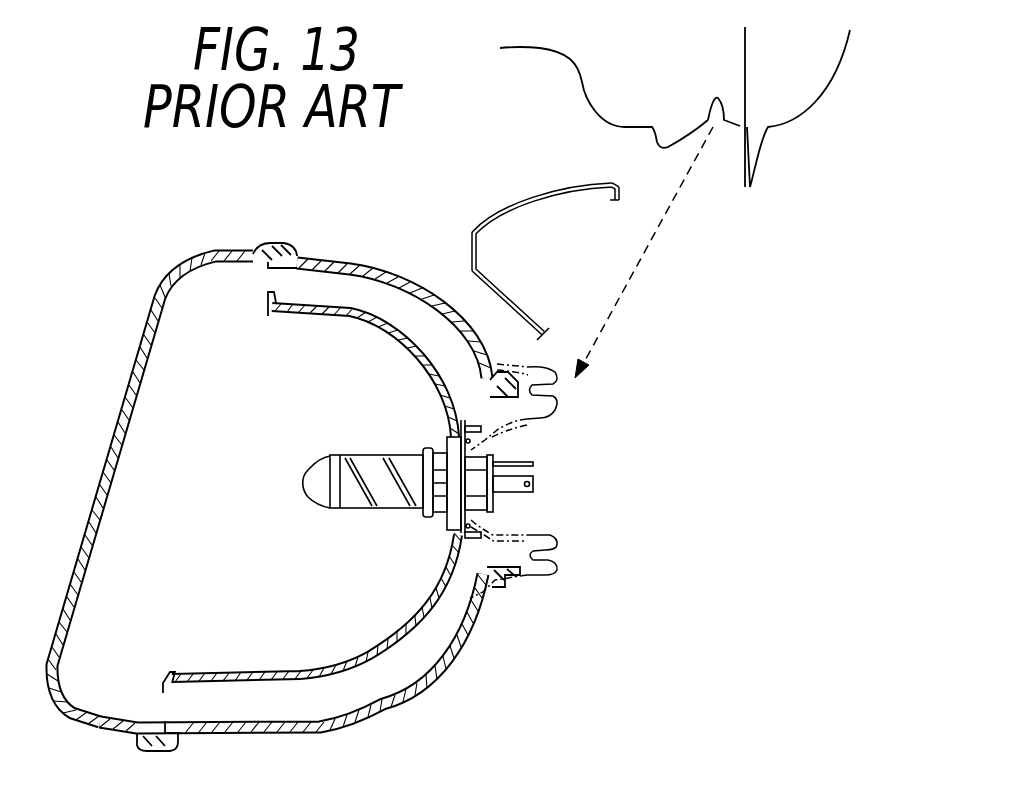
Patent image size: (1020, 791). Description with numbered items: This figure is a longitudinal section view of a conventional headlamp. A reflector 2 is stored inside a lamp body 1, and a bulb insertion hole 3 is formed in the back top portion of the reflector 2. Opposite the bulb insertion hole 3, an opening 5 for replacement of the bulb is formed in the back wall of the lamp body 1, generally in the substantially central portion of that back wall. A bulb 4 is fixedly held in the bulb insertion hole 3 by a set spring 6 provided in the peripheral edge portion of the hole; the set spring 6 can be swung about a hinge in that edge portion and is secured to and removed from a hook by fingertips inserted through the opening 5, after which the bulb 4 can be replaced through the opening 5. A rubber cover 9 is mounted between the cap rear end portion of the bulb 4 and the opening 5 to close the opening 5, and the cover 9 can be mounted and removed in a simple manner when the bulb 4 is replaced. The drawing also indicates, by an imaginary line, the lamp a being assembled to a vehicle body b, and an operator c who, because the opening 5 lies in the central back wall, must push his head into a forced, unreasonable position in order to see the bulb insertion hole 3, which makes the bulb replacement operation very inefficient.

The lamp body 1 is at (464, 315).
The reflector 2 is at (400, 330).
The bulb insertion hole 3 is at (447, 530).
The bulb 4 is at (336, 501).
The opening 5 is at (500, 570).
The set spring 6 is at (447, 440).
The rubber cover 9 is at (560, 546).
The lamp a is at (280, 476).
The vehicle body b is at (497, 257).
The operator c is at (797, 120).